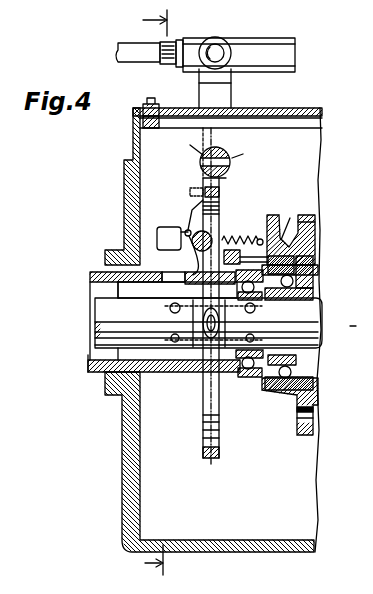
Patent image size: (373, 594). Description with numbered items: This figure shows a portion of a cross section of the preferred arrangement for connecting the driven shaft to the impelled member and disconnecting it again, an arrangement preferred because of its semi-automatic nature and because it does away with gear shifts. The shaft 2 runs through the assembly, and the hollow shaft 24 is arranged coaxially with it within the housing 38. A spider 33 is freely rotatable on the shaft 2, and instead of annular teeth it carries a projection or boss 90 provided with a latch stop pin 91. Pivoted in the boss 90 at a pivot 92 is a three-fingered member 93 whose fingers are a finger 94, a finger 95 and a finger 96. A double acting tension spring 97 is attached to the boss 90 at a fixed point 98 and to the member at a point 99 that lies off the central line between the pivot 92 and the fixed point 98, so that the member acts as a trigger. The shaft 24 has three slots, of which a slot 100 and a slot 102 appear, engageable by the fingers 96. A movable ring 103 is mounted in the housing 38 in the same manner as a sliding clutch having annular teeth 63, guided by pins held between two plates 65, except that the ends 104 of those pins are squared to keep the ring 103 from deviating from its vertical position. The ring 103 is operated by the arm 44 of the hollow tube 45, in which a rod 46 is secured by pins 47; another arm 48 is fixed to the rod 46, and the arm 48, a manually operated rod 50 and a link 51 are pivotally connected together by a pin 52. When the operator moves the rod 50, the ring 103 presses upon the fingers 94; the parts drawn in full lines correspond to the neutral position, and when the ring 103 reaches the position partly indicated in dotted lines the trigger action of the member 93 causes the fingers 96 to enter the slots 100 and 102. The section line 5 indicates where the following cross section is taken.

The shaft 2 is at (93, 320).
The section line 5— 5 is at (155, 294).
The hollow shaft 24 is at (88, 364).
The spider 33 is at (321, 212).
The housing 38 is at (123, 438).
The arm 44 is at (228, 178).
The hollow tube 45 is at (230, 142).
The rod 46 is at (186, 145).
The pins 47 is at (246, 157).
The arm 48 is at (224, 97).
The manually operated rod 50 is at (124, 50).
The link 51 is at (258, 46).
The pin 52 is at (216, 45).
The annular teeth 63 is at (361, 327).
The plates 65 is at (255, 310).
The boss 90 is at (272, 218).
The latch stop pin 91 is at (246, 259).
The pivot 92 is at (196, 250).
The three-fingered member 93 is at (186, 233).
The finger 94 is at (196, 188).
The finger 95 is at (287, 223).
The finger 96 is at (160, 236).
The double acting tension spring 97 is at (257, 238).
The fixed point 98 is at (282, 216).
The attachment point 99 is at (190, 225).
The slot 100 is at (185, 278).
The slot 102 is at (175, 312).
The movable ring 103 is at (203, 192).
The squared ends 104 is at (199, 348).